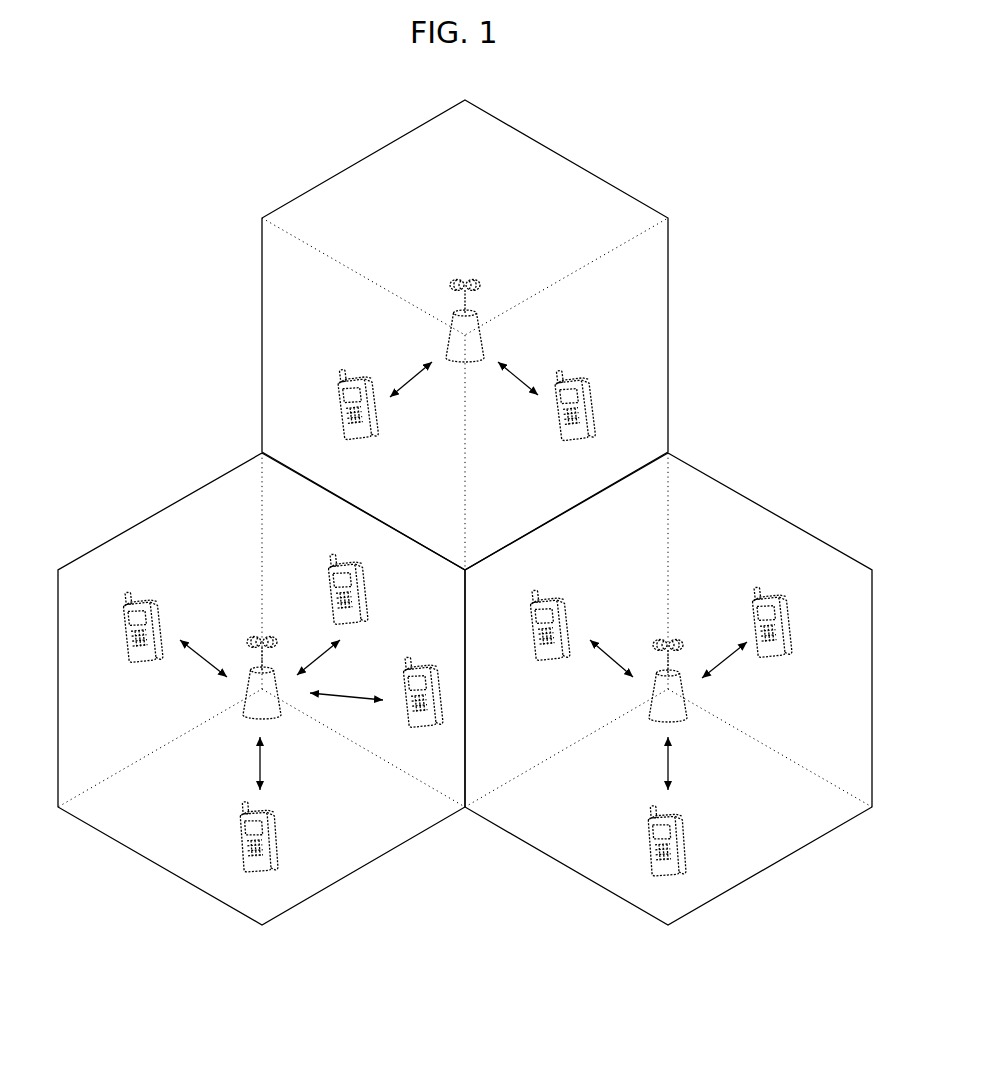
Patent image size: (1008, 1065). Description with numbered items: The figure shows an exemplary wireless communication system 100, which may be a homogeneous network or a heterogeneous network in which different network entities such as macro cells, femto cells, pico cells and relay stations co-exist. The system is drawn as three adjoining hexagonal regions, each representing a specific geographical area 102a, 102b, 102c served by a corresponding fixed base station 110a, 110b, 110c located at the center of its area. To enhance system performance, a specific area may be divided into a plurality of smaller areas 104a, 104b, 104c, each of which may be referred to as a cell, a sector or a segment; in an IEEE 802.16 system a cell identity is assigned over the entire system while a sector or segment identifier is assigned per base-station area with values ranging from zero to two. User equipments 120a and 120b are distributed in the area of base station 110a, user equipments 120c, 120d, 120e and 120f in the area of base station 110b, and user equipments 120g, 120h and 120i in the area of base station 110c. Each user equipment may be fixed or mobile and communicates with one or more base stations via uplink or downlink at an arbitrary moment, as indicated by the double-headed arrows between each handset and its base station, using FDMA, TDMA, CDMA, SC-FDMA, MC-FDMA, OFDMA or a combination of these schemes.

The wireless communication system 100 is at (742, 148).
The specific geographical area 102a is at (565, 157).
The specific geographical area 102b is at (158, 513).
The specific geographical area 102c is at (770, 512).
The smaller area 104a is at (482, 179).
The smaller area 104b is at (447, 500).
The smaller area 104c is at (548, 500).
The base station 110a is at (464, 278).
The base station 110b is at (280, 714).
The base station 110c is at (688, 715).
The user equipment 120a is at (340, 400).
The user equipment 120b is at (594, 410).
The user equipment 120c is at (145, 606).
The user equipment 120d is at (330, 570).
The user equipment 120e is at (420, 670).
The user equipment 120f is at (240, 835).
The user equipment 120g is at (550, 603).
The user equipment 120h is at (648, 840).
The user equipment 120i is at (787, 657).